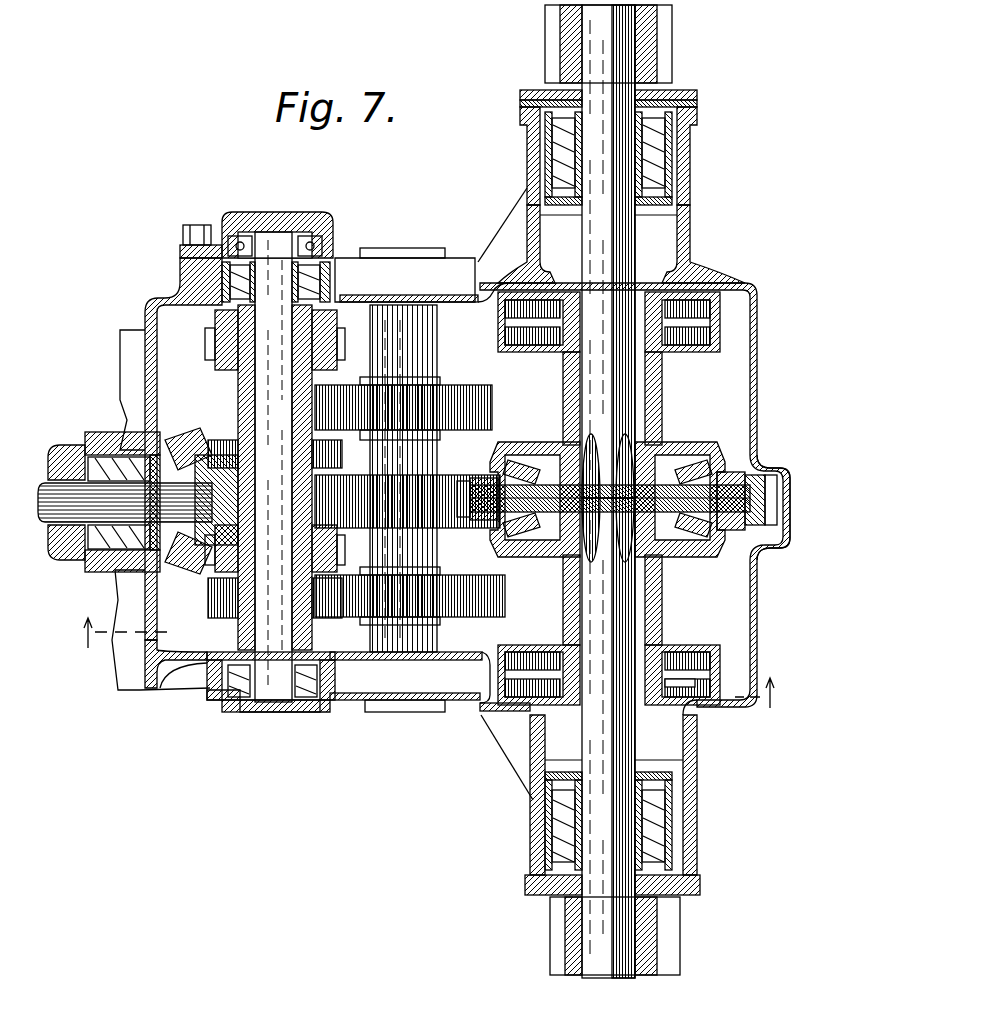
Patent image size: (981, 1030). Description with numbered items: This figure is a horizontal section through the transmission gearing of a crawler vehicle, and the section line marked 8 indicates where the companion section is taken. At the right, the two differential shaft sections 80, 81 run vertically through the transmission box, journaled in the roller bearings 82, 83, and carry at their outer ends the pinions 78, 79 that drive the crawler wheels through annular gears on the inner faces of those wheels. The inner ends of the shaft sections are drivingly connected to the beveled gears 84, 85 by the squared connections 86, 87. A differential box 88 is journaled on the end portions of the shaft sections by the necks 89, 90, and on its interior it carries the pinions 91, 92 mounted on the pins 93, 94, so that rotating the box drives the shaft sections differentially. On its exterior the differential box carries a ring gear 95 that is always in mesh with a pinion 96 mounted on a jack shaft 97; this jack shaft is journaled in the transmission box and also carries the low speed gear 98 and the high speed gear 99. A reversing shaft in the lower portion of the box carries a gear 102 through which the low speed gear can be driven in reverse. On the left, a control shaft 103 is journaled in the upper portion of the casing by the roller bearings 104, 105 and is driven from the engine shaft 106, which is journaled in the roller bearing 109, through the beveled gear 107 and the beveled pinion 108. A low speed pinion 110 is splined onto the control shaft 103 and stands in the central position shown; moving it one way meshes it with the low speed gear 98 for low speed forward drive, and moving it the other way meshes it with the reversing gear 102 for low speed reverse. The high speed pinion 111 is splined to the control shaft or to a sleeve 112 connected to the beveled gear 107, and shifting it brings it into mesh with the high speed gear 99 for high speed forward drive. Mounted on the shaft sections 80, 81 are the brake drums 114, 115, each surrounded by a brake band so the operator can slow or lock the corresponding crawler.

The section line 8- 8 is at (426, 665).
The pinion 78 is at (660, 55).
The pinion 79 is at (655, 932).
The differential shaft section 80 is at (628, 245).
The differential shaft section 81 is at (632, 745).
The roller bearing 82 is at (627, 155).
The roller bearing 83 is at (660, 830).
The beveled gear 84 is at (665, 452).
The beveled gear 85 is at (680, 565).
The squared connection 86 is at (660, 440).
The squared connection 87 is at (560, 560).
The differential box 88 is at (545, 430).
The neck 89 is at (563, 376).
The neck 90 is at (563, 606).
The pinion 91 is at (515, 455).
The pinion 92 is at (688, 555).
The pin 93 is at (500, 518).
The pin 94 is at (740, 472).
The ring gear 95 is at (772, 545).
The pinion 96 is at (440, 478).
The jack shaft 97 is at (410, 337).
The low speed gear 98 is at (470, 617).
The high speed gear 99 is at (445, 385).
The gear 102 is at (230, 455).
The control shaft 103 is at (290, 632).
The roller bearing 104 is at (235, 705).
The roller bearing 105 is at (200, 272).
The engine shaft 106 is at (52, 480).
The beveled gear 107 is at (190, 430).
The beveled pinion 108 is at (178, 545).
The roller bearing 109 is at (115, 572).
The low speed pinion 110 is at (345, 550).
The high speed pinion 111 is at (205, 350).
The sleeve 112 is at (355, 302).
The brake drum 114 is at (712, 288).
The brake drum 115 is at (715, 648).